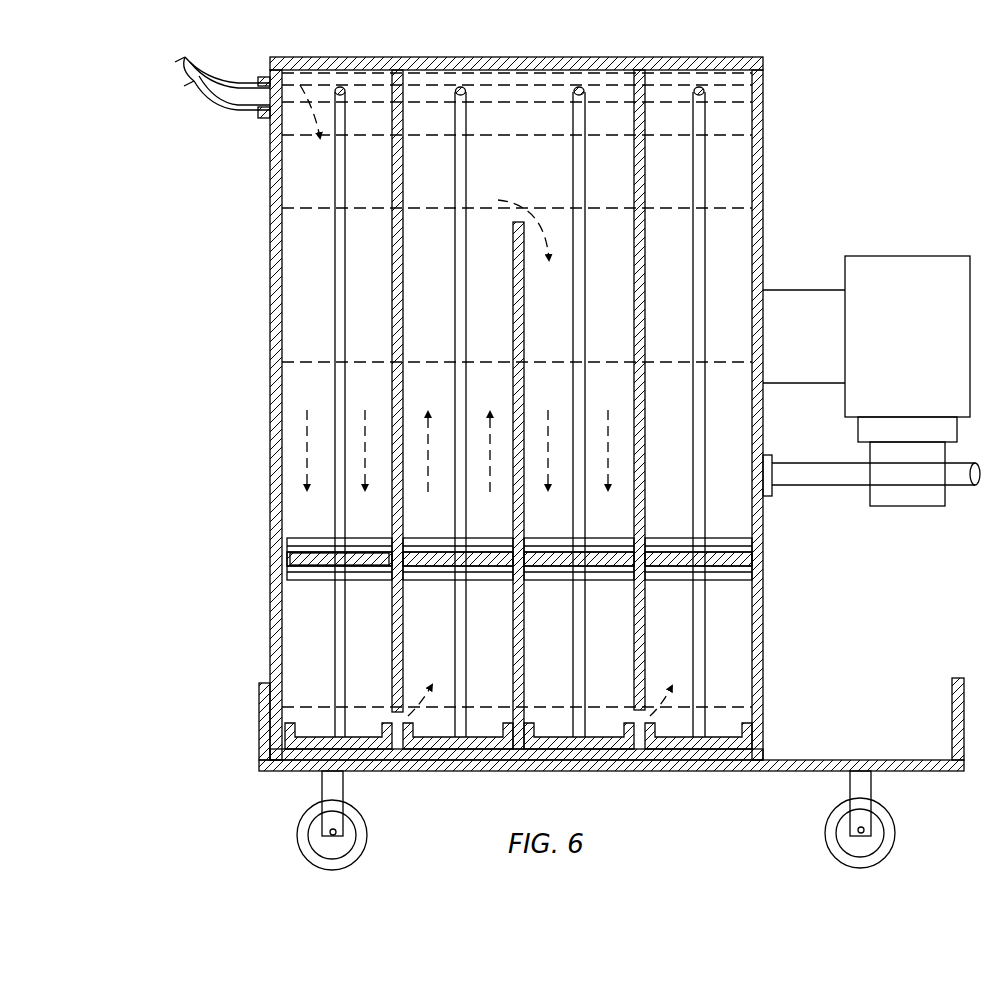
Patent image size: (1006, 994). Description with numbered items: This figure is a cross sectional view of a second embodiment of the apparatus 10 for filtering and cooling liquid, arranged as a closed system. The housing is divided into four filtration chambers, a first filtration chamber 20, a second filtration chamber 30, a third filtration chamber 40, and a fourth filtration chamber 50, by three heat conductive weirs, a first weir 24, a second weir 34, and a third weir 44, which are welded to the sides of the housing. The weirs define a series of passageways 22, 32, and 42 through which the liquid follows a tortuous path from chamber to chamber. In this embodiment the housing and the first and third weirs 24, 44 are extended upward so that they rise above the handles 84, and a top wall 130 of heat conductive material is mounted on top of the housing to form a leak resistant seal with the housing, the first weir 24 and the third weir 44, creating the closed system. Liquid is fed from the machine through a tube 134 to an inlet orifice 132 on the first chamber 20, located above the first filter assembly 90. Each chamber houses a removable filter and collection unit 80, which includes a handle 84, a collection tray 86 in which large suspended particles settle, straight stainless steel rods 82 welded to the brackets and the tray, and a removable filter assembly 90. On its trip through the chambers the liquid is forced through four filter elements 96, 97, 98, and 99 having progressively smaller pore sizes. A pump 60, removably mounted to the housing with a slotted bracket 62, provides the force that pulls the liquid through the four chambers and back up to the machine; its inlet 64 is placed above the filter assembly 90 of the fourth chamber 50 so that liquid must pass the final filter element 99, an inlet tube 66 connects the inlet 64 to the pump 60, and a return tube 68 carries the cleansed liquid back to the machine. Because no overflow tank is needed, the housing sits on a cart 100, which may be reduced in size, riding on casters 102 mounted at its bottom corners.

The apparatus for filtering and cooling liquid 10 is at (782, 183).
The first filtration chamber 20 is at (337, 356).
The passageway 22 is at (398, 725).
The first weir 24 is at (455, 372).
The second filtration chamber 30 is at (458, 356).
The passageway 32 is at (577, 159).
The second weir 34 is at (521, 750).
The third filtration chamber 40 is at (579, 355).
The passageway 42 is at (641, 722).
The third weir 44 is at (655, 280).
The fourth filtration chamber 50 is at (698, 355).
The pump 60 is at (907, 349).
The slotted bracket 62 is at (804, 336).
The inlet 64 is at (768, 498).
The inlet tube 66 is at (850, 505).
The return tube 68 is at (965, 490).
The removable filter and collection unit 80 is at (345, 308).
The straight stainless steel rods 82 is at (335, 612).
The handle 84 is at (392, 240).
The collection tray 86 is at (312, 728).
The removable filter assembly 90 is at (297, 540).
The filter element 96 is at (286, 557).
The filter element 97 is at (475, 570).
The filter element 98 is at (590, 572).
The filter element 99 is at (713, 560).
The cart 100 is at (960, 680).
The casters 102 is at (300, 828).
The top wall 130 is at (763, 62).
The inlet orifice 132 is at (258, 115).
The tube 134 is at (205, 93).